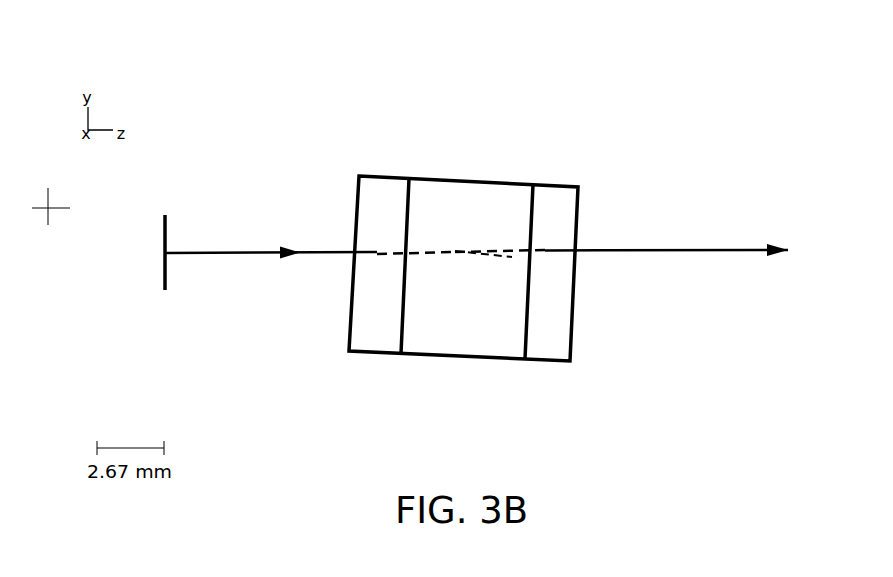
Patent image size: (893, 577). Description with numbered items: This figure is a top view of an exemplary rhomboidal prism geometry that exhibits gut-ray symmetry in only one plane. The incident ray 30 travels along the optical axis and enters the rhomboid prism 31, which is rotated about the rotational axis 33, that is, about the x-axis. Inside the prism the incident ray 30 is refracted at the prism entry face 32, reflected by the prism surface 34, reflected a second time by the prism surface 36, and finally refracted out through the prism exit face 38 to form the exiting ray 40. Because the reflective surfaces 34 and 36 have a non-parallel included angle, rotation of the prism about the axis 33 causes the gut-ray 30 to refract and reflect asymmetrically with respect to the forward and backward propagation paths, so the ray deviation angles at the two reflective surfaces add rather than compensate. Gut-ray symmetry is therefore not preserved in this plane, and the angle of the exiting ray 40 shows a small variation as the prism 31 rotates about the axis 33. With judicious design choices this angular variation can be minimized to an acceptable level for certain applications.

The incident ray 30 is at (235, 253).
The rhomboid prism 31 is at (385, 166).
The prism entry face 32 is at (376, 251).
The rotational axis 33 is at (50, 211).
The prism surface 34 is at (510, 258).
The prism surface 36 is at (453, 248).
The prism exit face 38 is at (550, 251).
The exiting ray 40 is at (650, 250).